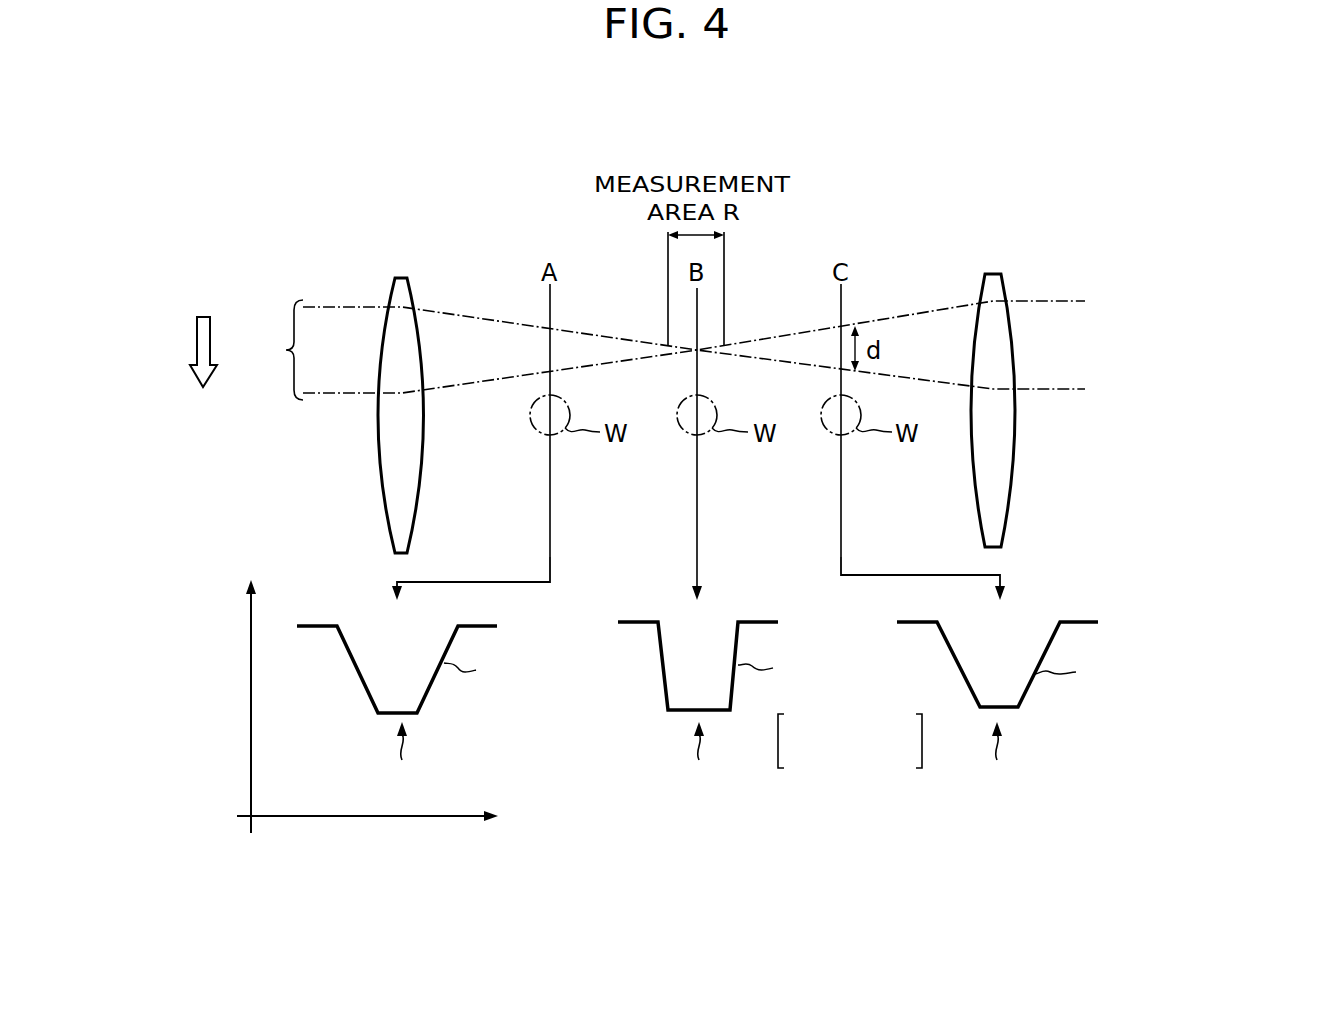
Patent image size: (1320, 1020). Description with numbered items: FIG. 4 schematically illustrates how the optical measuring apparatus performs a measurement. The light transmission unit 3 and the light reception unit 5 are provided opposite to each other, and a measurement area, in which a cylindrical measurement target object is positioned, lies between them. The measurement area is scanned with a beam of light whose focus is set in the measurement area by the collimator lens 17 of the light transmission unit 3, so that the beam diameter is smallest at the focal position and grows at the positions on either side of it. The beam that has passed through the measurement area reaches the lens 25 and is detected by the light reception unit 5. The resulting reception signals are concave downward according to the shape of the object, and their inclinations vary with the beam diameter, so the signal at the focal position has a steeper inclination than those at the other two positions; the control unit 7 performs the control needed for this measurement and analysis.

The light transmission unit 3 is at (302, 175).
The light reception unit 5 is at (1069, 175).
The control unit 7 is at (1103, 800).
The collimator lens 17 is at (401, 278).
The condenser lens 25 is at (992, 274).